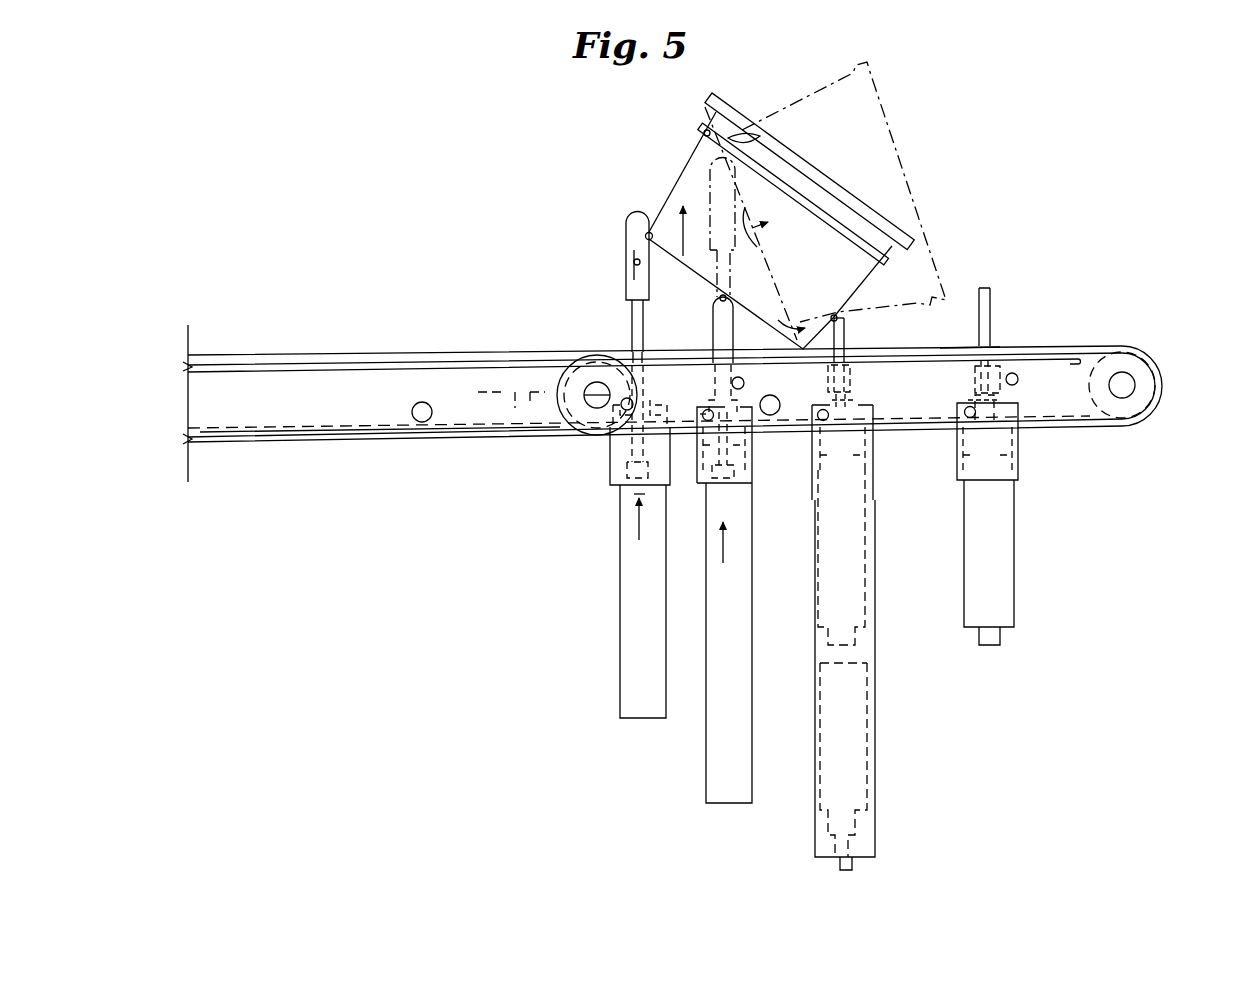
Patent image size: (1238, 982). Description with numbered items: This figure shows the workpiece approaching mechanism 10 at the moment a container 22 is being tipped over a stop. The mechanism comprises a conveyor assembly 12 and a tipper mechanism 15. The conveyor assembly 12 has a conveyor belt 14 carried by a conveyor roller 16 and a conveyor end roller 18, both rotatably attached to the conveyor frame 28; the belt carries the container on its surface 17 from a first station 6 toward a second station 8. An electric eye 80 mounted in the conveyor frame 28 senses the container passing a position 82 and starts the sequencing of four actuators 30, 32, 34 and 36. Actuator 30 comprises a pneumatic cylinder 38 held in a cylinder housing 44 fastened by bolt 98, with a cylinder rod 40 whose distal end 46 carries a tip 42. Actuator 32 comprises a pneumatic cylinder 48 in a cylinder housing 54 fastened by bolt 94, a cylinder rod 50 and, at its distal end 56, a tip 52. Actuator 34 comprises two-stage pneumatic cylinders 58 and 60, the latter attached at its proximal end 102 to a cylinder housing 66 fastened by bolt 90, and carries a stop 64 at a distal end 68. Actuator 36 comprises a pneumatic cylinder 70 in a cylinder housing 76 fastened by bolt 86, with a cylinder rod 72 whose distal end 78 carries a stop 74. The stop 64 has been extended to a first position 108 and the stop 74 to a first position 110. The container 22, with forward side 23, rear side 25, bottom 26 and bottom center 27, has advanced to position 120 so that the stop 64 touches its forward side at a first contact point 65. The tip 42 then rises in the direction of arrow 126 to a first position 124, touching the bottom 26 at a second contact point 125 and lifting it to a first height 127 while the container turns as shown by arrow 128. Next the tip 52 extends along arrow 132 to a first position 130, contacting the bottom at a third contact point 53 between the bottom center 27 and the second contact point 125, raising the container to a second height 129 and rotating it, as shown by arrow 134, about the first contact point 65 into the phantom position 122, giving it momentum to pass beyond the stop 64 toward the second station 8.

The first station 6 is at (208, 330).
The second station 8 is at (1163, 292).
The workpiece approaching mechanism 10 is at (1094, 247).
The conveyor assembly 12 is at (367, 481).
The conveyor belt 14 is at (1052, 333).
The tipper mechanism 15 is at (442, 596).
The conveyor roller 16 is at (553, 440).
The surface 17 is at (958, 346).
The conveyor end roller 18 is at (1150, 353).
The container 22 is at (693, 157).
The forward side 23 is at (862, 292).
The rear side 25 is at (700, 150).
The bottom 26 is at (677, 260).
The bottom center 27 is at (713, 290).
The conveyor frame 28 is at (304, 412).
The actuator 30 is at (612, 718).
The actuator 32 is at (698, 790).
The actuator 34 is at (803, 815).
The actuator 36 is at (960, 626).
The pneumatic cylinder 38 is at (650, 630).
The cylinder rod 40 is at (632, 340).
The tip 42 is at (635, 222).
The cylinder housing 44 is at (607, 483).
The distal end 46 is at (630, 318).
The pneumatic cylinder 48 is at (735, 728).
The cylinder rod 50 is at (785, 398).
The tip 52 is at (718, 305).
The third contact point 53 is at (728, 300).
The cylinder housing 54 is at (750, 460).
The distal end 56 is at (745, 380).
The pneumatic cylinder 58 is at (845, 585).
The pneumatic cylinder 60 is at (870, 750).
The stop 64 is at (846, 325).
The first contact point 65 is at (840, 316).
The cylinder housing 66 is at (873, 455).
The distal end 68 is at (853, 378).
The pneumatic cylinder 70 is at (1005, 565).
The cylinder rod 72 is at (1005, 402).
The stop 74 is at (993, 292).
The cylinder housing 76 is at (1020, 458).
The distal end 78 is at (1020, 378).
The electric eye 80 is at (523, 405).
The position 82 is at (862, 400).
The bolt 86 is at (963, 412).
The bolt 90 is at (812, 422).
The bolt 94 is at (707, 416).
The bolt 98 is at (628, 412).
The proximal end 102 is at (845, 858).
The first position 108 is at (848, 340).
The first position 110 is at (992, 327).
The position 120 is at (710, 93).
The position 122 is at (866, 70).
The first position 124 is at (627, 262).
The second contact point 125 is at (630, 263).
The arrow 126 is at (637, 532).
The first height 127 is at (650, 233).
The arrow 128 is at (682, 208).
The second height 129 is at (740, 140).
The first position 130 is at (697, 130).
The arrow 132 is at (725, 552).
The arrow 134 is at (742, 212).